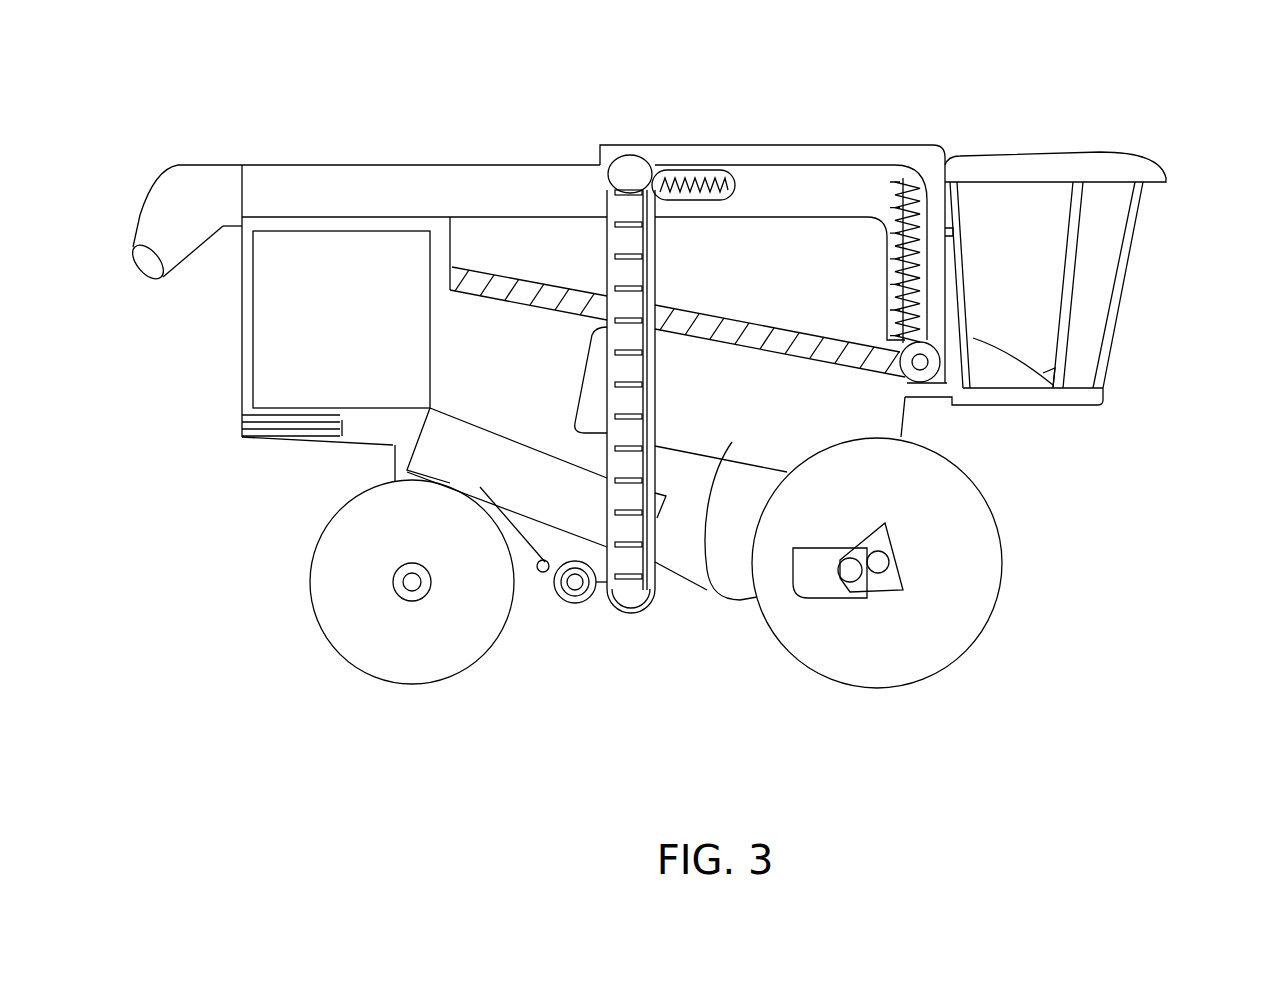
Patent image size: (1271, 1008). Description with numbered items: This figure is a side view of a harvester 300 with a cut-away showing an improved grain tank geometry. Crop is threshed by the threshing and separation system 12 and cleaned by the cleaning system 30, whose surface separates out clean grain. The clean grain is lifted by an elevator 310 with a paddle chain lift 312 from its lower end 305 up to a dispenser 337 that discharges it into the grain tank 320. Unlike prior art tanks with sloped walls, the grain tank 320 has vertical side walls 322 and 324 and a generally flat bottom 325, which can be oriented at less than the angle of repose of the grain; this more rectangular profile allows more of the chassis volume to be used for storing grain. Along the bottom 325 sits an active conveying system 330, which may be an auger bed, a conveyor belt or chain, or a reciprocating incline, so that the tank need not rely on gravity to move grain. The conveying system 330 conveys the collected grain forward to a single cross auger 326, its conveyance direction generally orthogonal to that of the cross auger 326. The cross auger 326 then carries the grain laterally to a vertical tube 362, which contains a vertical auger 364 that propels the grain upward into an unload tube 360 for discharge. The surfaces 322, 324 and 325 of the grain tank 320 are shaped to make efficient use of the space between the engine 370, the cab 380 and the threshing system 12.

The threshing and separation system 12 is at (712, 597).
The cleaning system 30 is at (435, 455).
The agricultural harvester 300 is at (992, 658).
The elevator lower end 305 is at (633, 620).
The elevator 310 is at (603, 248).
The elevator head 312 is at (607, 180).
The grain tank 320 is at (776, 240).
The vertical side wall 322 is at (450, 240).
The vertical side wall 324 is at (947, 233).
The generally flat bottom 325 is at (480, 297).
The cross auger 326 is at (927, 387).
The conveying system 330 is at (486, 262).
The drive capsule 337 is at (692, 180).
The unload tube 360 is at (292, 176).
The vertical tube 362 is at (927, 220).
The vertical auger 364 is at (905, 178).
The engine 370 is at (296, 304).
The cab 380 is at (1073, 388).